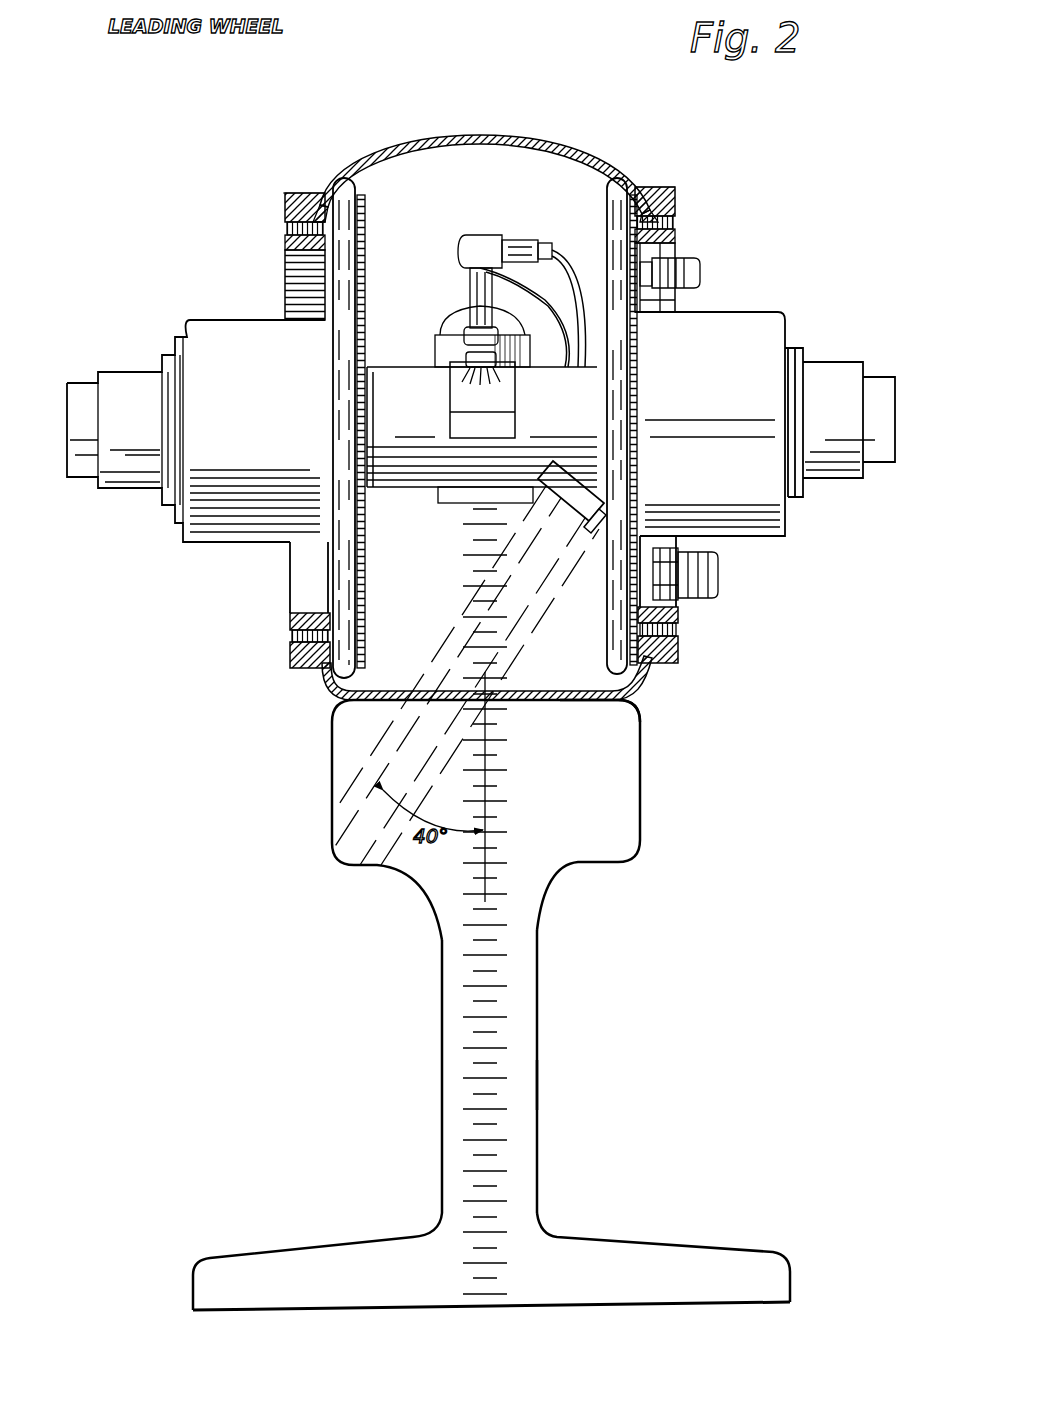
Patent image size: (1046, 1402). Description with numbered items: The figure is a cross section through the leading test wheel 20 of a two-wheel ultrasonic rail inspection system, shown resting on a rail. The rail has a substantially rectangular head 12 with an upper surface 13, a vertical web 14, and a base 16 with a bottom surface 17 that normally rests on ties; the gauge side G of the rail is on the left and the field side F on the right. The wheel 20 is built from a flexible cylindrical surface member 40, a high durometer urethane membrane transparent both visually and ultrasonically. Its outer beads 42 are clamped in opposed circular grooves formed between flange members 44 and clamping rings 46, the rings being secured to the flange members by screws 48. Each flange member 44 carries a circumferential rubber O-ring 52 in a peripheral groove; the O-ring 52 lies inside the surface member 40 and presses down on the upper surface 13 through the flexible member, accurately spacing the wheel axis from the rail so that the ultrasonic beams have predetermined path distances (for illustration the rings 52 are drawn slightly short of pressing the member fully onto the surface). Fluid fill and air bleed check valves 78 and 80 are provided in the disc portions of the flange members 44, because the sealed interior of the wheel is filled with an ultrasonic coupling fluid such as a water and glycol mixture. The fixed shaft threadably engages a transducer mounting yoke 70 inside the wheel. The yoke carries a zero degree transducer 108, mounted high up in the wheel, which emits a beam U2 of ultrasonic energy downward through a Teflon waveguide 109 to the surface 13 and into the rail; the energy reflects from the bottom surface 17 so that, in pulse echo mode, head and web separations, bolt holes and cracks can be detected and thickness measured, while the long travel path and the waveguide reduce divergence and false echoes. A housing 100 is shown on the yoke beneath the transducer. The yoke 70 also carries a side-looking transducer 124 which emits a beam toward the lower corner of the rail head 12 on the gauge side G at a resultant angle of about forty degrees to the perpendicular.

The leading test wheel 20 is at (196, 243).
The flexible cylindrical surface member 40 is at (518, 142).
The outer beads 42 is at (320, 200).
The flange members 44 is at (367, 215).
The clamping rings 46 is at (283, 210).
The screws 48 is at (285, 228).
The O-ring 52 is at (360, 600).
The transducer mounting yoke 70 is at (397, 365).
The fluid fill and air bleed check valve 78 is at (720, 576).
The fluid fill and air bleed check valve 80 is at (700, 276).
The transducer housing 100 is at (497, 414).
The zero degree transducer 108 is at (470, 322).
The Teflon waveguide 109 is at (446, 490).
The side-looking transducer 124 is at (562, 468).
The rail head 12 is at (625, 835).
The upper surface 13 is at (612, 698).
The vertical web 14 is at (538, 1002).
The base 16 is at (700, 1240).
The bottom surface 17 is at (457, 1308).
The field side of rail F is at (640, 773).
The gauge side G is at (333, 757).
The ultrasonic beam U2 is at (497, 1085).